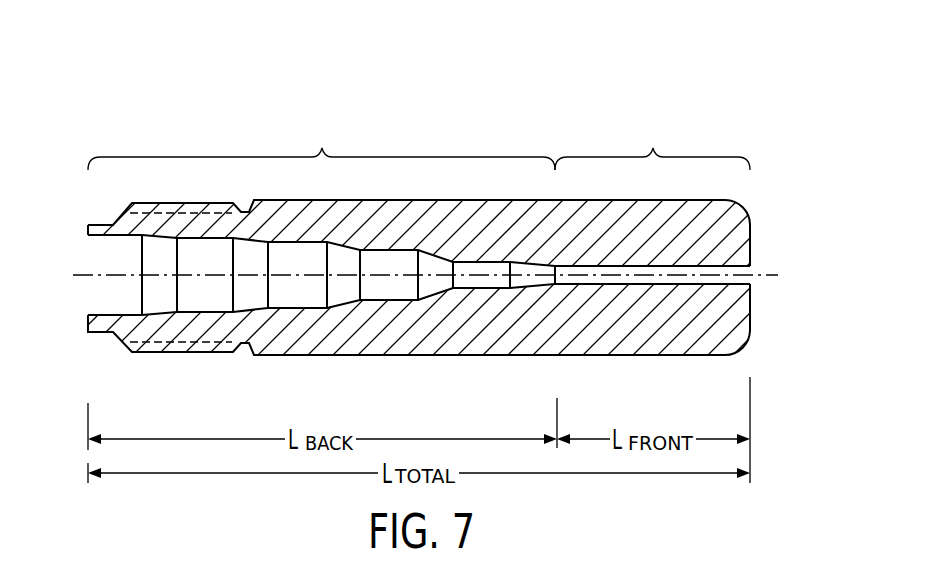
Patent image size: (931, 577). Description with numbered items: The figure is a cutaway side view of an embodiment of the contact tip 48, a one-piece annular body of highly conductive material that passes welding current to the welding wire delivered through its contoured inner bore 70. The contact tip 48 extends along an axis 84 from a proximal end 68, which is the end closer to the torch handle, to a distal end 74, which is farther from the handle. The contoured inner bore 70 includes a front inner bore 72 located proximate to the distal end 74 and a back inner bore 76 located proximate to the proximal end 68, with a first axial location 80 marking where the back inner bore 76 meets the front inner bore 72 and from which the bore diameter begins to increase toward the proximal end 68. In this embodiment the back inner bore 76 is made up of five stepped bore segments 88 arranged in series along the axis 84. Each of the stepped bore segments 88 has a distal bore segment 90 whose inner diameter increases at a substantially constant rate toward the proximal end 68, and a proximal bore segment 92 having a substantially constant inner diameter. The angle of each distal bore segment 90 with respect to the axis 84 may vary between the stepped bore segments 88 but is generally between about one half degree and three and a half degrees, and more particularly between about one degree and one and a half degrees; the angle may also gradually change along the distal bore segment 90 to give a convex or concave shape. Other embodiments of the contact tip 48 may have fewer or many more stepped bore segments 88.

The contact tip 48 is at (702, 84).
The proximal end 68 is at (90, 153).
The contoured inner bore 70 is at (85, 293).
The front inner bore 72 is at (652, 142).
The distal end 74 is at (753, 152).
The back inner bore 76 is at (321, 142).
The first axial location 80 is at (557, 152).
The axis 84 is at (761, 276).
The stepped bore segments 88 is at (177, 358).
The distal bore segment 90 is at (157, 237).
The proximal bore segment 92 is at (205, 303).